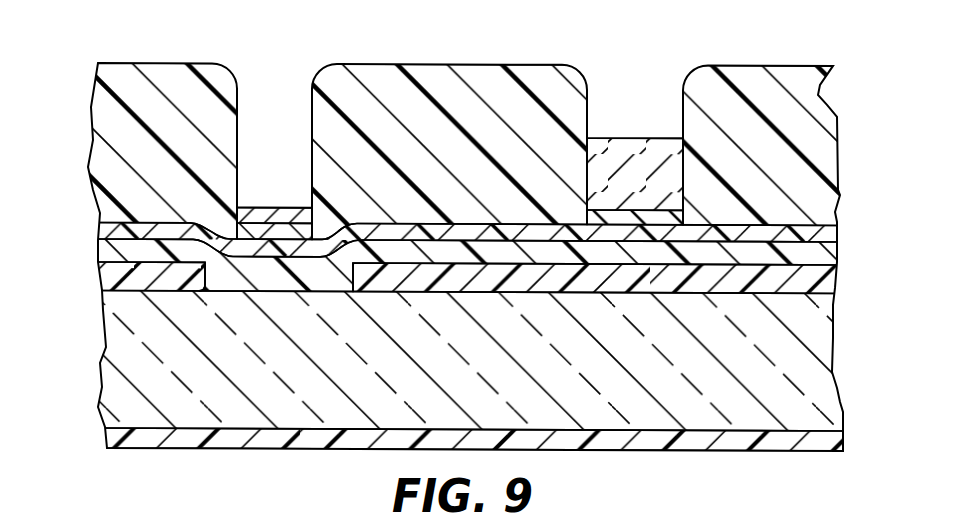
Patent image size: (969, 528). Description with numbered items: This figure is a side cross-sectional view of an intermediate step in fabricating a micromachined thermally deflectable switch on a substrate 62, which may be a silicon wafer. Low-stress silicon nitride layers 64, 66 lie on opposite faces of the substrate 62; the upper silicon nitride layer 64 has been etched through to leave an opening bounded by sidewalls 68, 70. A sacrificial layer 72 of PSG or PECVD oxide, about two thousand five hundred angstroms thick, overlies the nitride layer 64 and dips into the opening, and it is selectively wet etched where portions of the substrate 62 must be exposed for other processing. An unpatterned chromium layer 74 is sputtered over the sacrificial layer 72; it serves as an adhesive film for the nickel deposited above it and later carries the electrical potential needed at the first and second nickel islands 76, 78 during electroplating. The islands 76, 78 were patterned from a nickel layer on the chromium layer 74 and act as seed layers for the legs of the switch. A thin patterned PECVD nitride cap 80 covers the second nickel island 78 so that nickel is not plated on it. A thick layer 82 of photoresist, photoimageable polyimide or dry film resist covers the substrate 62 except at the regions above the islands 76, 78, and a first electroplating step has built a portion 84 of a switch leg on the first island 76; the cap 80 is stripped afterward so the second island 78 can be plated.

The substrate 62 is at (110, 387).
The silicon nitride layer 64 is at (105, 275).
The silicon nitride layer 66 is at (118, 437).
The sidewall 68 is at (207, 282).
The sidewall 70 is at (352, 282).
The sacrificial layer 72 is at (827, 249).
The chromium layer 74 is at (108, 232).
The first nickel island 76 is at (650, 209).
The second nickel island 78 is at (282, 236).
The cap 80 is at (268, 212).
The thick layer 82 is at (108, 112).
The portion of a switch leg 84 is at (613, 138).